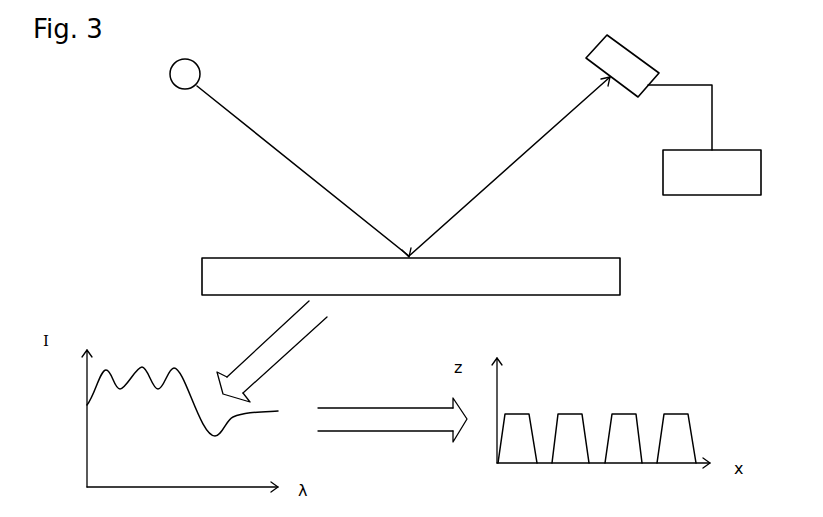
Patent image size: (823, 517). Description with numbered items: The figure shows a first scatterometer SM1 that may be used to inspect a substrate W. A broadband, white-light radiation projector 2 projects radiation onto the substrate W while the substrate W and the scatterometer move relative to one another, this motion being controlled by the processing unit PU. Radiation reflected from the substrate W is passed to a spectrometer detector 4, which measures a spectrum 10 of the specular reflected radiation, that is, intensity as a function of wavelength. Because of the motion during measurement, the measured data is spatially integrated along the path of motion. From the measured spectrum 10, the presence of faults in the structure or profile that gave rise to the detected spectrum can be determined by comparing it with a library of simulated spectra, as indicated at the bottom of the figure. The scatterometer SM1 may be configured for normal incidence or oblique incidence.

The broadband radiation projector 2 is at (200, 70).
The spectrometer detector 4 is at (652, 67).
The spectrum 10 is at (538, 102).
The first scatterometer SM1 is at (158, 163).
The substrate W is at (411, 276).
The processing unit PU is at (704, 140).